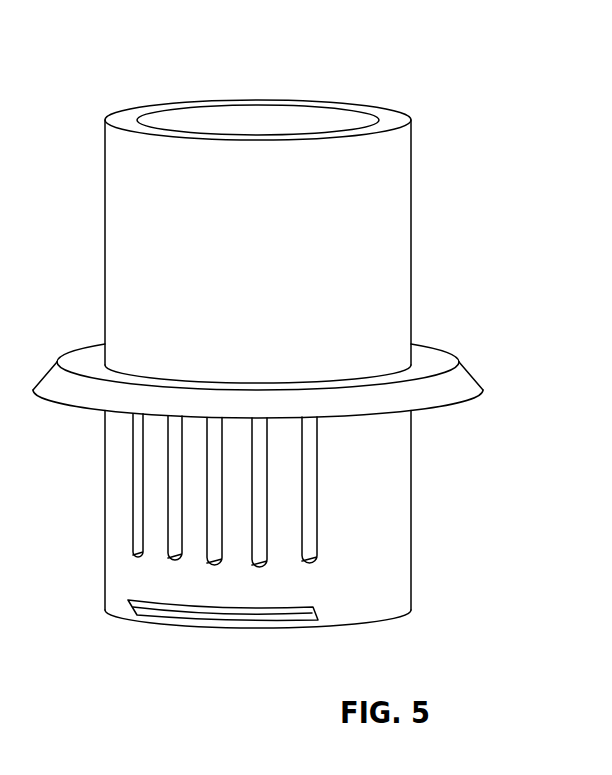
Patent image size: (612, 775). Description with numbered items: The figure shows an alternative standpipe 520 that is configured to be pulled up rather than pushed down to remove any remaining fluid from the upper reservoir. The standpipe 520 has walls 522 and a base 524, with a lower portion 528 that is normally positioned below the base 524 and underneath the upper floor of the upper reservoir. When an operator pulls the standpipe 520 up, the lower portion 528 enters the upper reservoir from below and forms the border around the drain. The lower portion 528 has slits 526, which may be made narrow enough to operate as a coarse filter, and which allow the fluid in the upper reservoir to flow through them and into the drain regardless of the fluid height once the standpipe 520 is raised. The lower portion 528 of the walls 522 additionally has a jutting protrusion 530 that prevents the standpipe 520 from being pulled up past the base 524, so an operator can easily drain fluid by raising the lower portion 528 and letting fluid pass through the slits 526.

The standpipe 520 is at (70, 100).
The walls 522 is at (123, 213).
The base 524 is at (463, 383).
The slits 526 is at (128, 530).
The lower portion 528 is at (421, 558).
The jutting protrusion 530 is at (158, 610).